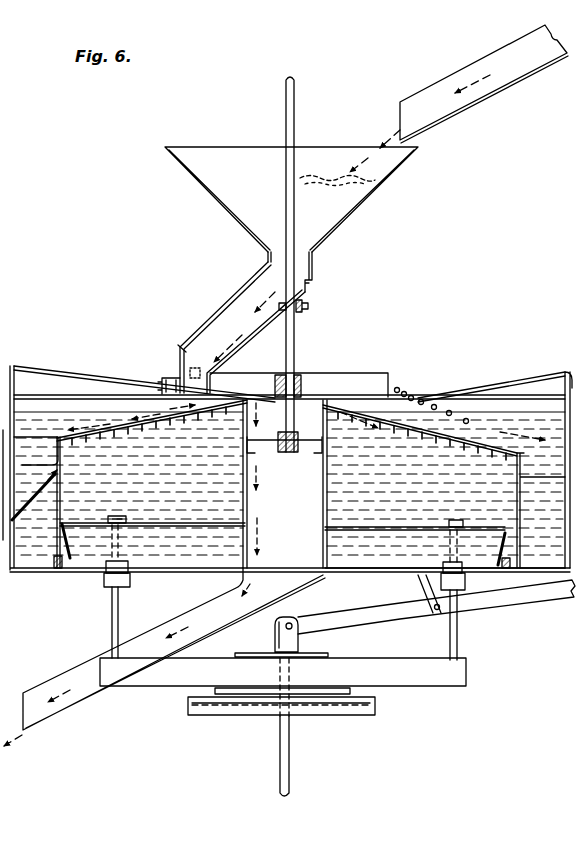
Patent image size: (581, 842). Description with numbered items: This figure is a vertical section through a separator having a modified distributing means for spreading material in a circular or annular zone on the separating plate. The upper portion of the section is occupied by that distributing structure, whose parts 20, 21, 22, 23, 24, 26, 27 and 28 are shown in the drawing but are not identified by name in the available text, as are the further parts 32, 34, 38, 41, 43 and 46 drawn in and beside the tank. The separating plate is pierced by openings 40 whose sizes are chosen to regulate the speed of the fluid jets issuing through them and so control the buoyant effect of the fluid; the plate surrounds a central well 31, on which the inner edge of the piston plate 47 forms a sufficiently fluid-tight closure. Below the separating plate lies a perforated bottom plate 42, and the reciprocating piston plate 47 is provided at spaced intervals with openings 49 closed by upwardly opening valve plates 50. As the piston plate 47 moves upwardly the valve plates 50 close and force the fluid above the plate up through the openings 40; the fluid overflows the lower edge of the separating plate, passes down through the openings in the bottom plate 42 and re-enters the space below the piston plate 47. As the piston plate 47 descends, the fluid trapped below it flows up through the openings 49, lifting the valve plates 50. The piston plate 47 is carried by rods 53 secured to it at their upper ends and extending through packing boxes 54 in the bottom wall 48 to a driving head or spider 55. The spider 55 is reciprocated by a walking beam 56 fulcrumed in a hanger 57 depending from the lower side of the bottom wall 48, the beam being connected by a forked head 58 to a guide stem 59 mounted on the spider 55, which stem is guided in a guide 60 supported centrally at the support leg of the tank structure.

The hopper funnel 20 is at (242, 222).
The bearing housing 21 is at (383, 380).
The rotating cover disc 22 is at (165, 413).
The shaft 23 is at (295, 336).
The material granules 24 is at (398, 384).
The inclined feed tube 26 is at (213, 380).
The tube bracket 27 is at (163, 392).
The tube elbow 28 is at (176, 364).
The central well 31 is at (250, 514).
The partition wall 32 is at (61, 510).
The lower shaft bearing 34 is at (318, 430).
The deflector walls 38 is at (360, 412).
The openings 40 is at (135, 440).
The outer tank wall 41 is at (562, 415).
The bottom plate 42 is at (530, 486).
The overflow pipe 43 is at (60, 478).
The discharge chute 46 is at (60, 680).
The piston plate 47 is at (184, 527).
The bottom wall 48 is at (346, 572).
The openings 49 is at (68, 530).
The valve plates 50 is at (115, 520).
The rods 53 is at (111, 627).
The packing boxes 54 is at (104, 581).
The driving head or spider 55 is at (432, 682).
The walking beam 56 is at (386, 612).
The hanger 57 is at (408, 596).
The forked head 58 is at (275, 641).
The guide stem 59 is at (282, 752).
The guide 60 is at (300, 716).